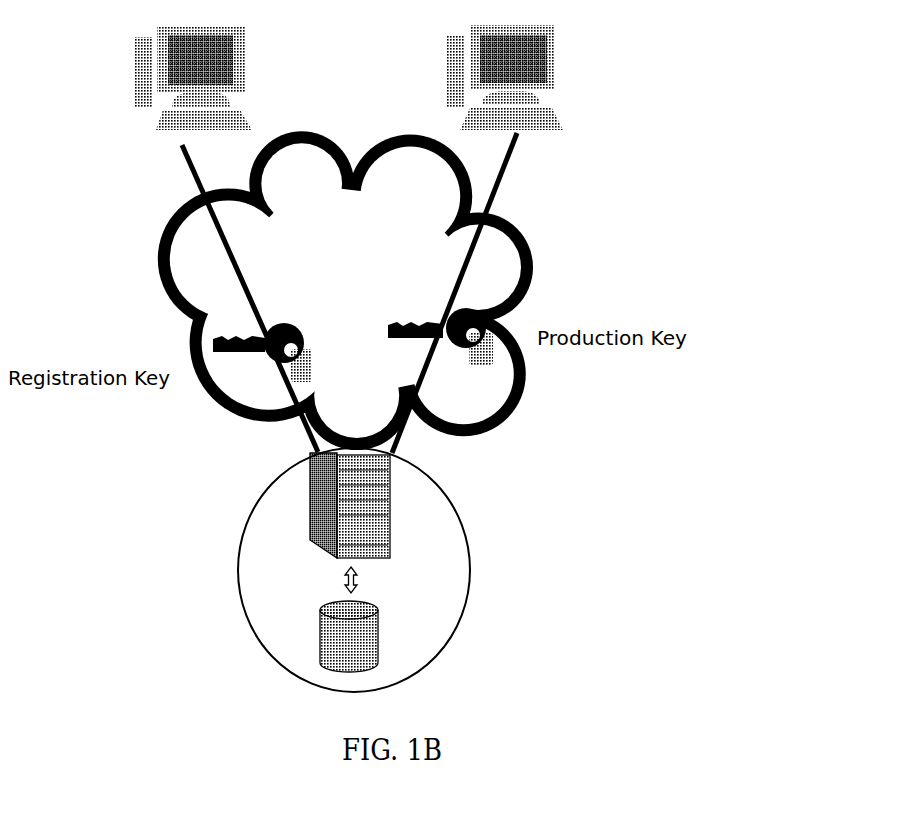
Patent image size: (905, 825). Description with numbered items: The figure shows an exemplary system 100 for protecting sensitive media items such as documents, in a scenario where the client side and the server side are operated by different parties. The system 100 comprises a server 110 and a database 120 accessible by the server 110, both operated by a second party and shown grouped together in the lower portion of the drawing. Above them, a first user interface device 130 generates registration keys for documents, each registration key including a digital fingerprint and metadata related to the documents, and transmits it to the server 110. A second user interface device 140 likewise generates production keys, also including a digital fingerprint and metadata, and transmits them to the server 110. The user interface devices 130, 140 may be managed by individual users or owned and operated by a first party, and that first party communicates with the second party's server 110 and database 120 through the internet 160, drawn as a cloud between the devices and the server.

The system 100 is at (653, 532).
The server 110 is at (375, 505).
The database 120 is at (331, 644).
The first user interface device 130 is at (142, 78).
The second user interface device 140 is at (533, 77).
The internet 160 is at (345, 290).